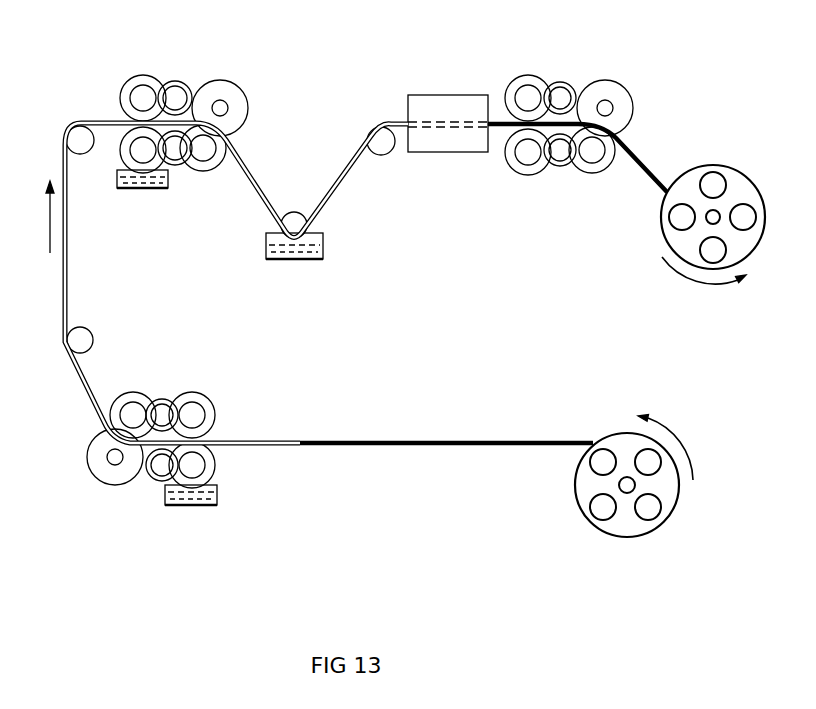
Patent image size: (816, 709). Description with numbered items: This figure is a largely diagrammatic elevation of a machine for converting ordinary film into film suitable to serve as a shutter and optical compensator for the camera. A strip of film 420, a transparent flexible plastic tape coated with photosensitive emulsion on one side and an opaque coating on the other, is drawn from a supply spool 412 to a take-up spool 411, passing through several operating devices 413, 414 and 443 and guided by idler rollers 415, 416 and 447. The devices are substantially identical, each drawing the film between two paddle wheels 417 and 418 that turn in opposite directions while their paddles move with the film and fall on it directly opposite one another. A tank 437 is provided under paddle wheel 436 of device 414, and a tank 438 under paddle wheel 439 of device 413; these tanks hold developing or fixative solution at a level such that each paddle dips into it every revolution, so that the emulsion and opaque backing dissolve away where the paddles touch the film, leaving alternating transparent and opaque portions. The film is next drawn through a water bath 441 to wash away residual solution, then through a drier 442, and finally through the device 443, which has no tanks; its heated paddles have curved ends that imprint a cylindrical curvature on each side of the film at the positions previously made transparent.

The take-up spool 411 is at (663, 233).
The supply spool 412 is at (631, 522).
The paddle device 413 is at (225, 399).
The paddle device 414 is at (253, 84).
The idler roller 415 is at (83, 338).
The idler roller 416 is at (78, 135).
The paddle wheel 417 is at (520, 164).
The paddle wheel 418 is at (530, 80).
The film 420 is at (417, 445).
The paddle wheel 436 is at (125, 153).
The tank 437 is at (148, 182).
The tank 438 is at (202, 498).
The paddle wheel 439 is at (208, 467).
The water bath 441 is at (292, 250).
The drier 442 is at (457, 137).
The paddle device 443 is at (555, 180).
The idler roller 447 is at (380, 148).